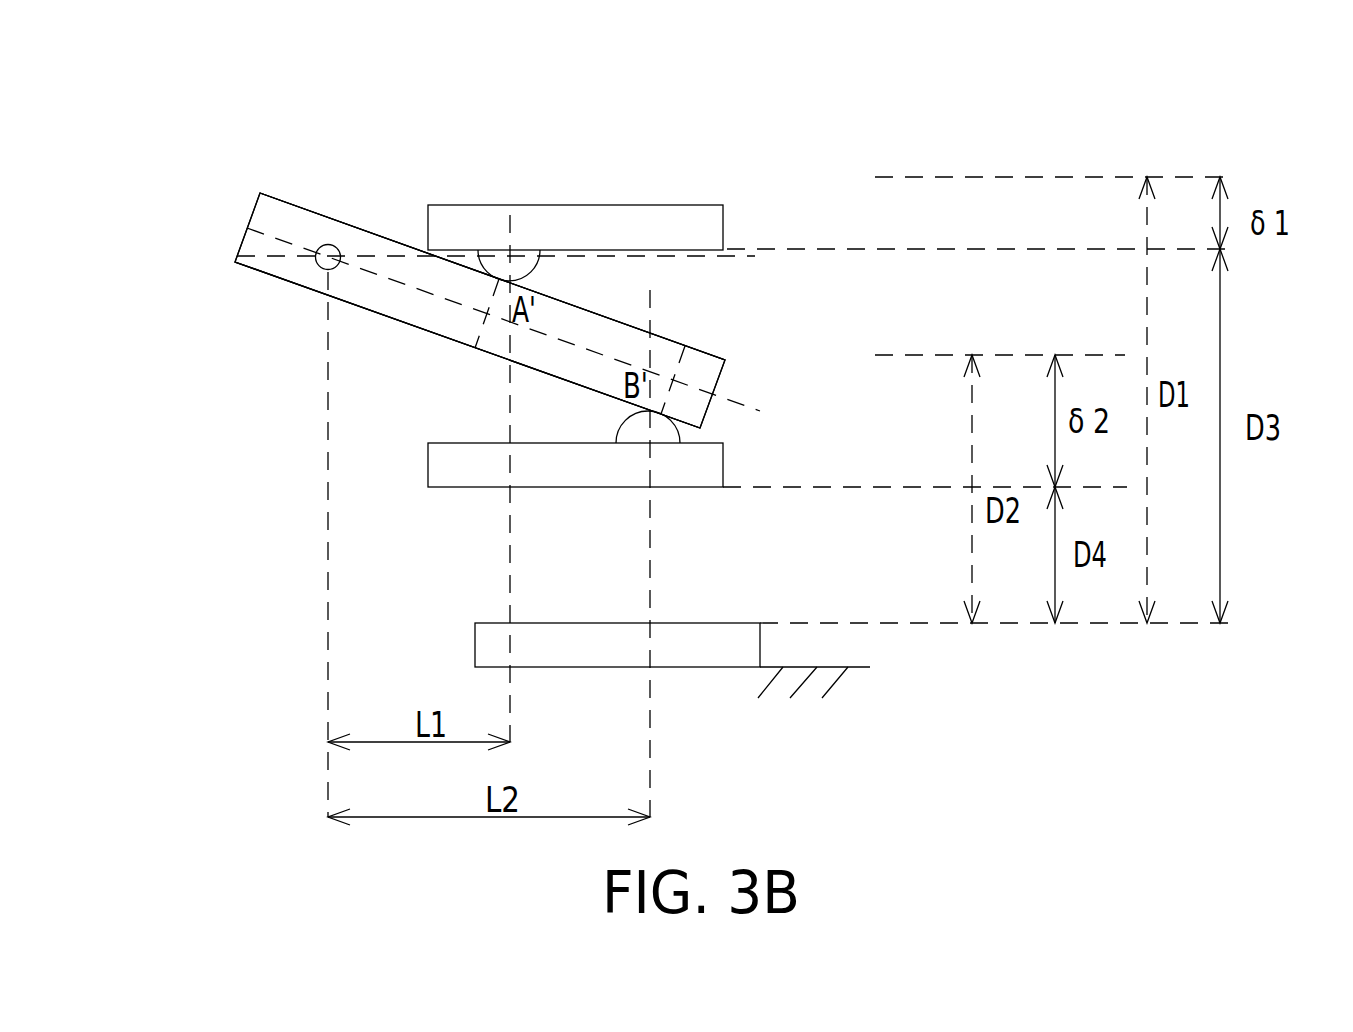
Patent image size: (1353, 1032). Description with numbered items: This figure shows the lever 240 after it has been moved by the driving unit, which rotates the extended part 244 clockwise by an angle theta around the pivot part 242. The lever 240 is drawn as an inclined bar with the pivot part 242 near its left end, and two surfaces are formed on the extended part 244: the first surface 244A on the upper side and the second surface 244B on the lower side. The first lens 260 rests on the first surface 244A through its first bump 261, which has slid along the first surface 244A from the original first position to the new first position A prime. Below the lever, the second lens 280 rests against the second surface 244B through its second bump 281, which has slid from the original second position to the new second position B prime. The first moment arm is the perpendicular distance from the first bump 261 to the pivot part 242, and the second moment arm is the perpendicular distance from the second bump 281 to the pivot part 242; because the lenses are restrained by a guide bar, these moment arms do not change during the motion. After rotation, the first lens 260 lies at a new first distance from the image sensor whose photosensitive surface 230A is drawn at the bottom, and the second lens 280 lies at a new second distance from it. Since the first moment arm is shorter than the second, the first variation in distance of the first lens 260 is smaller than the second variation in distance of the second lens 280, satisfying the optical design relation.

The lever 240 is at (272, 277).
The pivot part 242 is at (322, 247).
The extended part 244 is at (382, 237).
The first surface 244A is at (413, 246).
The second surface 244B is at (398, 321).
The first lens 260 is at (723, 227).
The first bump 261 is at (537, 262).
The second lens 280 is at (723, 465).
The second bump 281 is at (678, 437).
The photosensitive surface 230A is at (724, 622).